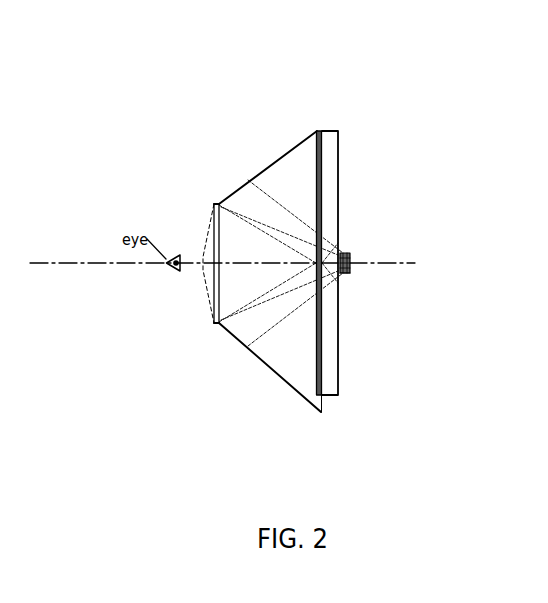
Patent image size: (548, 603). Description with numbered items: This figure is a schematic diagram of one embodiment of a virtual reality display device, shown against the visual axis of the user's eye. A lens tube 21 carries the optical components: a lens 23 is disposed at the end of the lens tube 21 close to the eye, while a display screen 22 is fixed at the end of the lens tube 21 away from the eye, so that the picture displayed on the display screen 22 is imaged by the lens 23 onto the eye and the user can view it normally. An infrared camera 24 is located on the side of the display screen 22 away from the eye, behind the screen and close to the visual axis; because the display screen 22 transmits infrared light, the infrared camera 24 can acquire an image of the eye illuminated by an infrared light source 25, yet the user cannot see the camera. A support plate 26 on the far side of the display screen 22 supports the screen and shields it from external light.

The lens tube 21 is at (248, 182).
The display screen 22 is at (321, 186).
The lens 23 is at (208, 273).
The infrared camera 24 is at (345, 266).
The infrared light source 25 is at (343, 274).
The support plate 26 is at (340, 150).